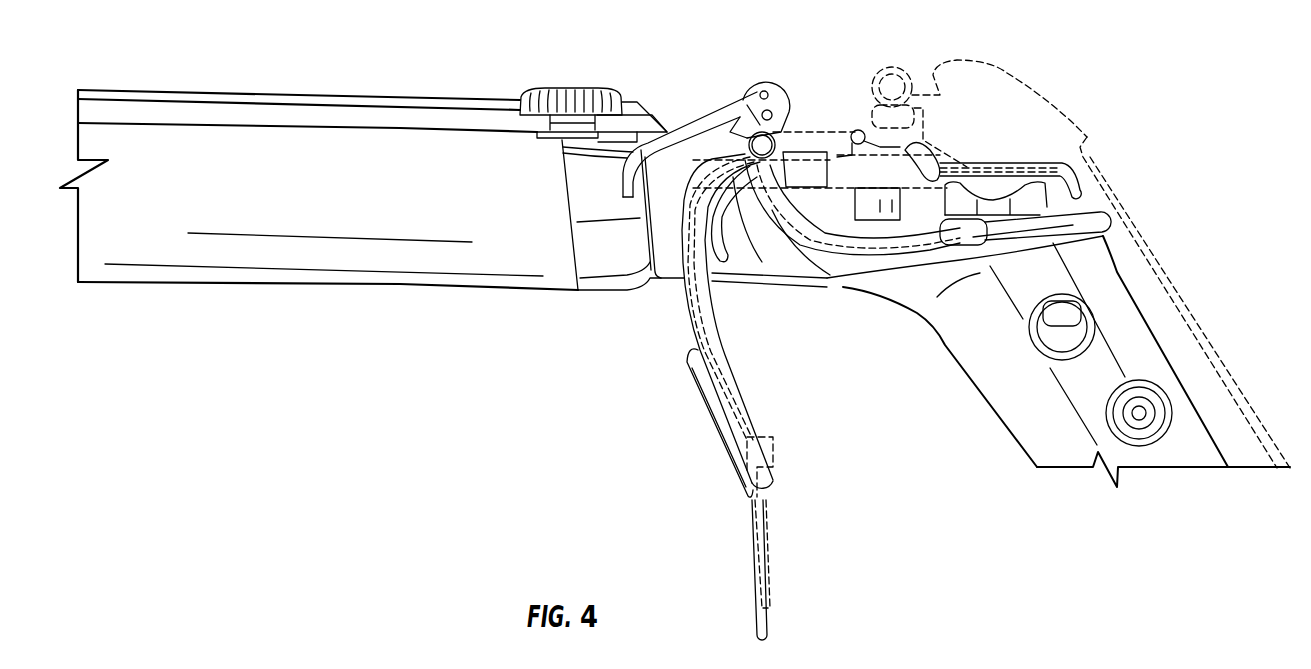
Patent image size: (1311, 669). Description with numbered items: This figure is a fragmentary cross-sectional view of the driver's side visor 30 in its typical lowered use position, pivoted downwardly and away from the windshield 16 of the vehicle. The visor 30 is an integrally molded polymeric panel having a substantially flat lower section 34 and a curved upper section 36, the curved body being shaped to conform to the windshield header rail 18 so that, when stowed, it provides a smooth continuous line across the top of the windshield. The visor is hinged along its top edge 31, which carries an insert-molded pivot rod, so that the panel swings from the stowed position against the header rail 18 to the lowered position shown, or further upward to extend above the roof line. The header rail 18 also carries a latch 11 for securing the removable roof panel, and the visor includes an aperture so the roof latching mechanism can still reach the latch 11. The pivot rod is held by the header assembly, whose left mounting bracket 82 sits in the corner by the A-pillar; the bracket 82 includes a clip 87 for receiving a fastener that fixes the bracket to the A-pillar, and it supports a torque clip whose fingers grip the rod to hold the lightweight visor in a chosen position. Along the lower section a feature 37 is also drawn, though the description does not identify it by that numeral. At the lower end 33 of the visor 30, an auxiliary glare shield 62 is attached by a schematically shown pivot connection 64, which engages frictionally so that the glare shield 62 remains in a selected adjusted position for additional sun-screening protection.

The latch 11 is at (695, 118).
The windshield 16 is at (1237, 377).
The windshield header rail 18 is at (1058, 103).
The visor 30 is at (742, 353).
The top edge 31 is at (737, 95).
The lower end 33 is at (775, 492).
The flat lower section 34 is at (750, 405).
The curved upper section 36 is at (692, 247).
The pad 37 is at (710, 423).
The auxiliary glare shield 62 is at (768, 568).
The pivot connection 64 is at (777, 452).
The left mounting bracket 82 is at (1003, 388).
The clip 87 is at (1145, 430).